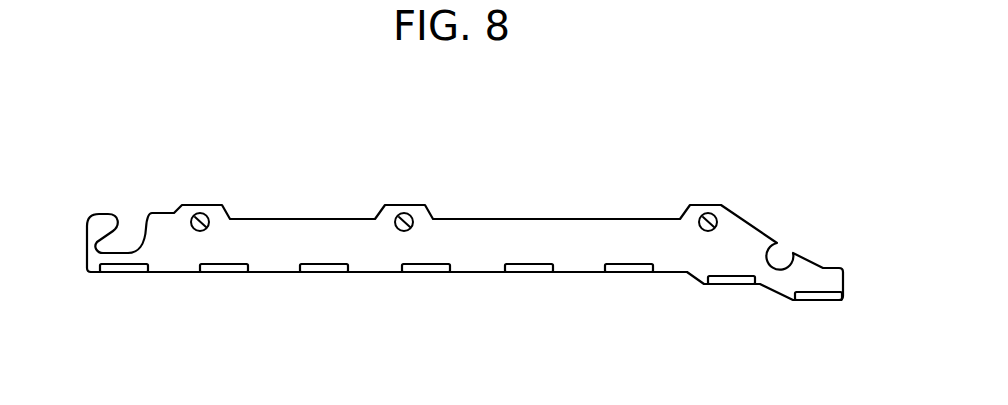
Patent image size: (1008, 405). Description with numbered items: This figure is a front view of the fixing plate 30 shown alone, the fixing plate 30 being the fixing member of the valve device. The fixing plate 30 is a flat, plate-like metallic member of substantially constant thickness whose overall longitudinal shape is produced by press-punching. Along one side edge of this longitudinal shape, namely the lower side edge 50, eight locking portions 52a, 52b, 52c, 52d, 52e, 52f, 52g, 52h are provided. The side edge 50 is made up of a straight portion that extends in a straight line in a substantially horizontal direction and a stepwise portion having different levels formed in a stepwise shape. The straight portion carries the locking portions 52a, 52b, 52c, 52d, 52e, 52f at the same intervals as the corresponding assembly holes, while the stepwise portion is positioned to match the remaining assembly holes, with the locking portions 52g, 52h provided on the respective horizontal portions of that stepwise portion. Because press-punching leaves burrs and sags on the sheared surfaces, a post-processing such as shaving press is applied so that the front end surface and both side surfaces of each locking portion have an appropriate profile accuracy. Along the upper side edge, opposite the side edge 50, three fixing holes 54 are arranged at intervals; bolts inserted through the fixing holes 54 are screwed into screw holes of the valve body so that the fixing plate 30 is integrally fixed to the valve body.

The fixing plate 30 is at (602, 150).
The lower side edge 50 is at (373, 276).
The locking portion 52a is at (123, 276).
The locking portion 52b is at (223, 276).
The locking portion 52c is at (325, 276).
The locking portion 52d is at (425, 276).
The locking portion 52e is at (527, 276).
The locking portion 52f is at (627, 276).
The locking portion 52g is at (731, 288).
The locking portion 52h is at (819, 304).
The fixing hole 54 is at (197, 213).